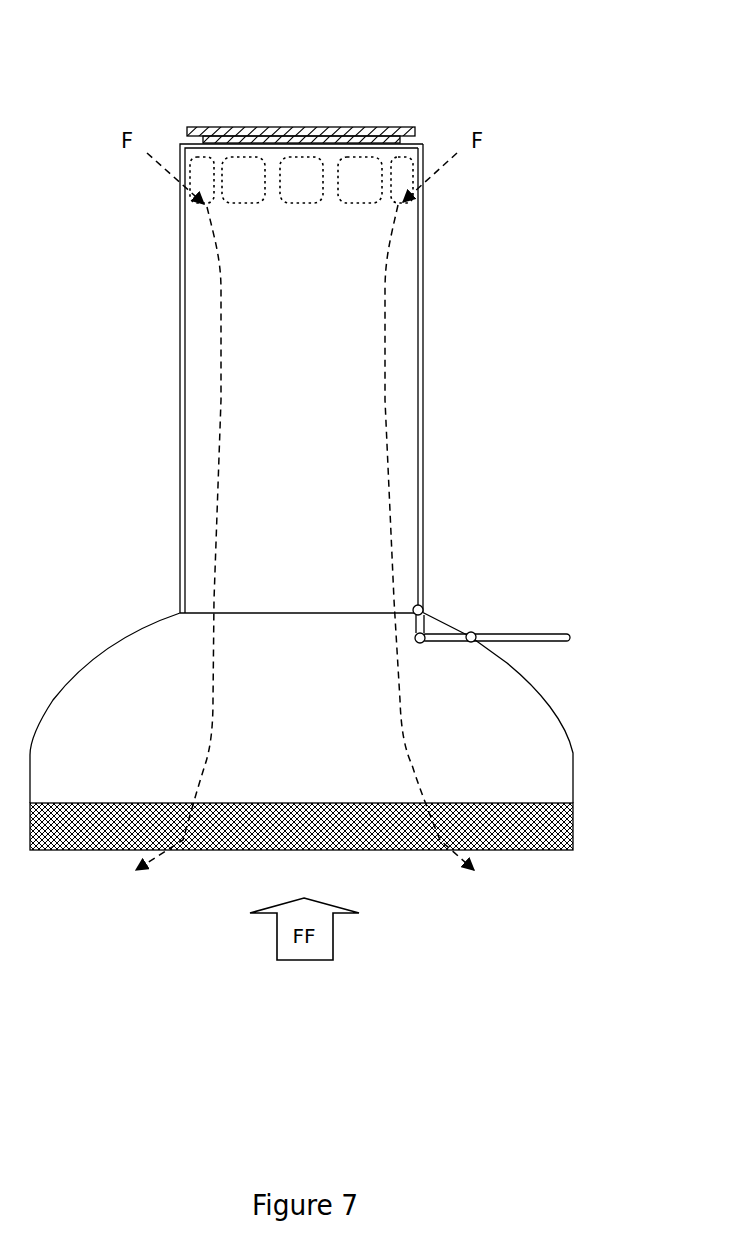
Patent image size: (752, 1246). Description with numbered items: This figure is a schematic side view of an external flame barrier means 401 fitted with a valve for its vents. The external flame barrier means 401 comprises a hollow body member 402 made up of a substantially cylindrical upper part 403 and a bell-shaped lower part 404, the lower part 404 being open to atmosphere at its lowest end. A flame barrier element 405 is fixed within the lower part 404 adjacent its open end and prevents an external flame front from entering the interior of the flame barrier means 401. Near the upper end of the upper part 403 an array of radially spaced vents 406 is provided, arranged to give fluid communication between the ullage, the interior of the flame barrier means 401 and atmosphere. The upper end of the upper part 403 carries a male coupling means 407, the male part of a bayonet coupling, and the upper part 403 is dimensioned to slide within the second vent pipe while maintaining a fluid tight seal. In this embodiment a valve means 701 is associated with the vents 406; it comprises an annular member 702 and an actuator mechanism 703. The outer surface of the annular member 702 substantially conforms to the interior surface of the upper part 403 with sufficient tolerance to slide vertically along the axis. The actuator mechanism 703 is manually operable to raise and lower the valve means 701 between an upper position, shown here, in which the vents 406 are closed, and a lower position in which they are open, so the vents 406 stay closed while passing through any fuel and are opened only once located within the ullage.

The external flame barrier means 401 is at (512, 370).
The hollow body member 402 is at (180, 613).
The substantially cylindrical upper part 403 is at (180, 333).
The bell-shaped lower part 404 is at (568, 728).
The flame barrier element 405 is at (213, 832).
The vents 406 is at (363, 155).
The male coupling means 407 is at (195, 127).
The valve means 701 is at (303, 187).
The annular member 702 is at (421, 503).
The actuator mechanism 703 is at (508, 637).